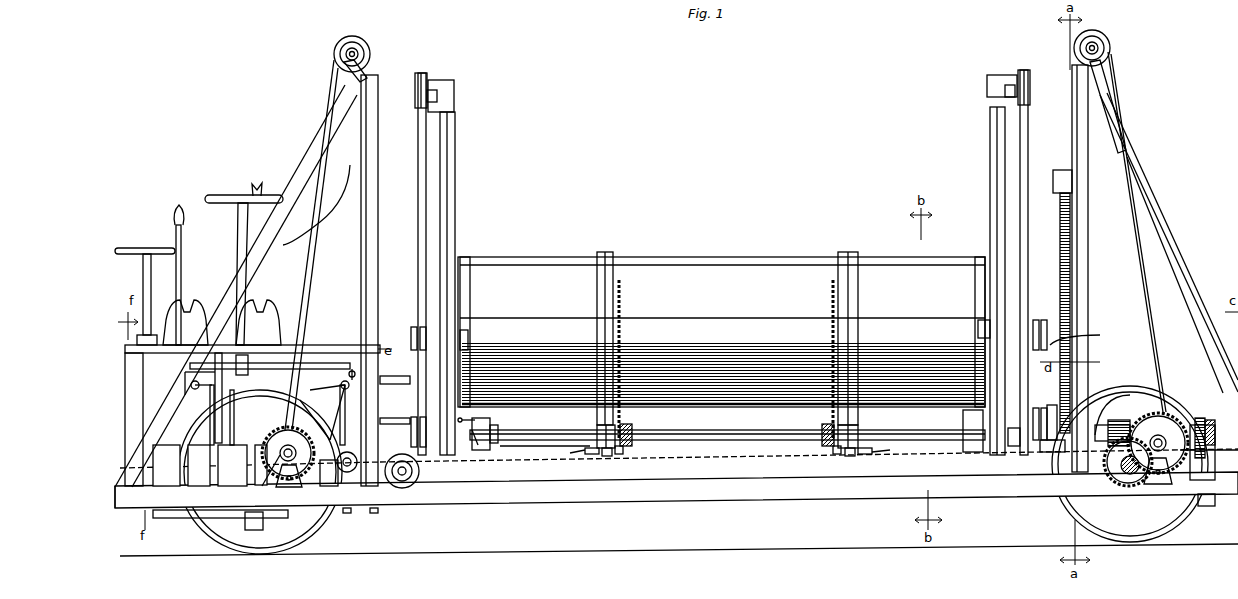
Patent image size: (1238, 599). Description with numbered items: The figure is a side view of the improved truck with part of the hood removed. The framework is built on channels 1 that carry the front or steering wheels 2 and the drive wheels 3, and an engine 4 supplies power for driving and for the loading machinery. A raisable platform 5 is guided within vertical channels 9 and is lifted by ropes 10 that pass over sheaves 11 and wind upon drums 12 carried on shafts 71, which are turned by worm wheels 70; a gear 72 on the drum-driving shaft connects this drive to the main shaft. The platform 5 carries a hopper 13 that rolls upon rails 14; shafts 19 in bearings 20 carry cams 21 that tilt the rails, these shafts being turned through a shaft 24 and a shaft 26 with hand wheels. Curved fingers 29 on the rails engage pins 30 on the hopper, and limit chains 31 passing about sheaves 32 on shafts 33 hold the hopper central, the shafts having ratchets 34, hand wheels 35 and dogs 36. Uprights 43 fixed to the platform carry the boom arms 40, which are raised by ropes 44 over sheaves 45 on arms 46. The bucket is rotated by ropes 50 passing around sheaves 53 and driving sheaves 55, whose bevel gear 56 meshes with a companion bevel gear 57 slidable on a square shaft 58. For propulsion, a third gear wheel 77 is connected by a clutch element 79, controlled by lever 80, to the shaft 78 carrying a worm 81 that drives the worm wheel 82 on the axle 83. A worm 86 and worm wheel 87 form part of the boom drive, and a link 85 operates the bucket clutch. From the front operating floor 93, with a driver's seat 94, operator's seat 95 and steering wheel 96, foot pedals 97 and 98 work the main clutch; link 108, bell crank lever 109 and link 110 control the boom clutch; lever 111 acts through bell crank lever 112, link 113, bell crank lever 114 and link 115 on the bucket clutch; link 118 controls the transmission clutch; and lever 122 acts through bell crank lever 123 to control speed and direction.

The channels 1 is at (702, 496).
The front or steering wheels 2 is at (282, 540).
The drive wheels 3 is at (1158, 530).
The engine 4 is at (200, 473).
The platform 5 is at (742, 462).
The vertical channels 9 is at (375, 158).
The ropes 10 is at (363, 72).
The sheaves 11 is at (355, 38).
The drums 12 is at (270, 438).
The hopper 13 is at (708, 270).
The rails 14 is at (597, 422).
The shafts 19 is at (607, 456).
The bearings 20 is at (594, 454).
The cams 21 is at (574, 453).
The shaft 24 is at (530, 434).
The shaft 26 is at (419, 468).
The curved fingers 29 is at (621, 454).
The pins 30 is at (597, 316).
The limit chains 31 is at (623, 350).
The sheaves 32 is at (630, 430).
The shafts 33 is at (538, 446).
The ratchets 34 is at (481, 450).
The hand wheels 35 is at (470, 420).
The dogs 36 is at (479, 425).
The arms 40 is at (468, 340).
The uprights 43 is at (456, 158).
The ropes 44 is at (420, 200).
The sheaves 45 is at (423, 73).
The arms 46 is at (445, 85).
The ropes 50 is at (380, 380).
The sheaves 53 is at (410, 334).
The driving sheaves 55 is at (380, 421).
The bevel gear 56 is at (1052, 408).
The companion bevel gear 57 is at (1055, 452).
The square shaft 58 is at (1060, 296).
The worm wheels 70 is at (270, 474).
The shafts 71 is at (300, 474).
The gear 72 is at (1206, 506).
The third gear wheel 77 is at (1210, 420).
The shaft 78 is at (1106, 425).
The clutch element 79 is at (1199, 418).
The lever 80 is at (1195, 476).
The worm 81 is at (1122, 395).
The worm wheel 82 is at (1108, 474).
The axle 83 is at (1128, 474).
The link 85 is at (374, 513).
The worm 86 is at (347, 513).
The worm wheel 87 is at (358, 459).
The front operating floor 93 is at (330, 345).
The seat 94 is at (336, 225).
The seat 95 is at (147, 248).
The steering wheel 96 is at (222, 196).
The foot pedal 97 is at (258, 322).
The foot pedal 98 is at (196, 318).
The link 108 is at (346, 413).
The bell crank lever 109 is at (324, 406).
The link 110 is at (258, 366).
The lever 111 is at (179, 208).
The bell crank lever 112 is at (246, 520).
The link 113 is at (210, 418).
The bell crank lever 114 is at (198, 390).
The link 115 is at (185, 373).
The link 118 is at (338, 476).
The lever 122 is at (259, 184).
The bell crank lever 123 is at (352, 371).